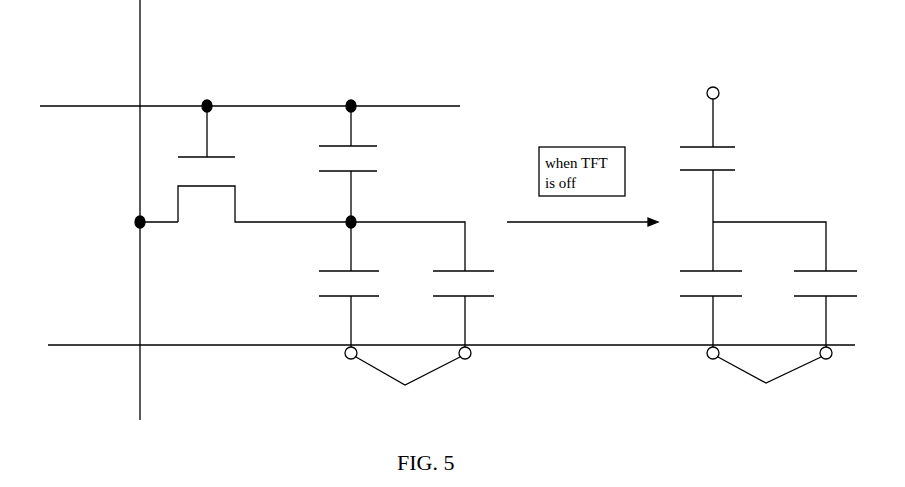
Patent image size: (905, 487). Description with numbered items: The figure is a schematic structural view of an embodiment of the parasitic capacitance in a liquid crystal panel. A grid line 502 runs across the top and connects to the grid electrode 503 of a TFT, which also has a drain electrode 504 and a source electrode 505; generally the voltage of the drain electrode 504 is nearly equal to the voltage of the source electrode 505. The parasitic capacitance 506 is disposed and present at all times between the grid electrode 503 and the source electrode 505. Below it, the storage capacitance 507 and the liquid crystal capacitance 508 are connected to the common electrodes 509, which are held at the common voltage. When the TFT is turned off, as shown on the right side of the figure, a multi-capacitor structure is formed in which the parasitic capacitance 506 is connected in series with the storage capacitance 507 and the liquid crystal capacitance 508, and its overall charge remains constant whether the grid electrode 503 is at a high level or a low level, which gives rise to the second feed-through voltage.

The grid line 502 is at (235, 106).
The grid electrode 503 is at (206, 118).
The drain electrode 504 is at (156, 232).
The source electrode 505 is at (264, 217).
The parasitic capacitance 506 is at (572, 179).
The storage capacitance 507 is at (514, 284).
The liquid crystal capacitance 508 is at (660, 309).
The common electrode 509 is at (588, 380).